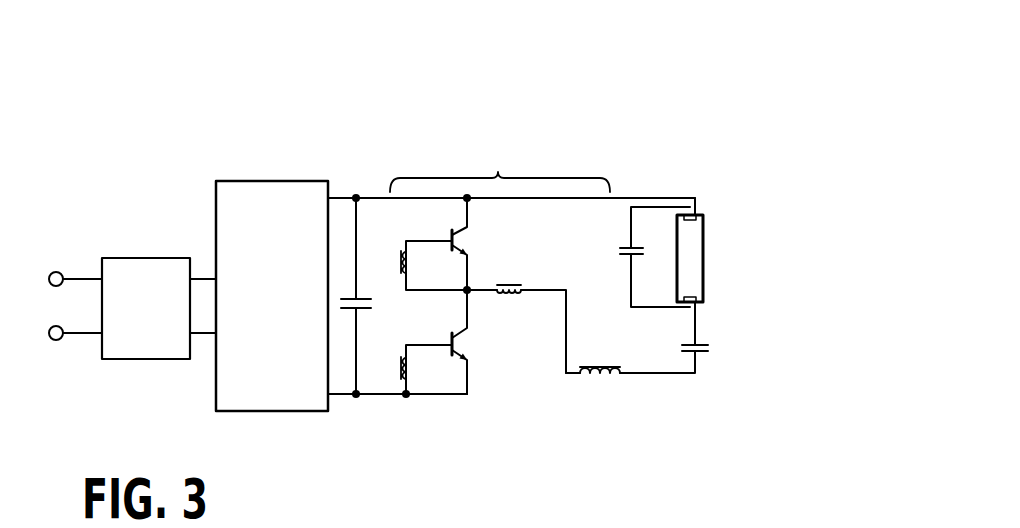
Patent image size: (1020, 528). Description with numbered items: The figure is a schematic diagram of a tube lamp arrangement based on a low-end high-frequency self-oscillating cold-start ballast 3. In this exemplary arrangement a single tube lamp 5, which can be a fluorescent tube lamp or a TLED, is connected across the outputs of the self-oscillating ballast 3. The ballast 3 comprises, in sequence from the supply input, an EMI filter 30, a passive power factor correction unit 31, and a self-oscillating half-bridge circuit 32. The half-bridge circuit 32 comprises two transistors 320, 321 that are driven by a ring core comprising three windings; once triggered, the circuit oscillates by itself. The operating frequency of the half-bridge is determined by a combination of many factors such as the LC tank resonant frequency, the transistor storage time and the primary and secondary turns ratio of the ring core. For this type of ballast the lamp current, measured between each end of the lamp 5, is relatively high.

The self-oscillating ballast 3 is at (414, 130).
The EMI filter 30 is at (155, 258).
The passive power factor correction unit 31 is at (269, 181).
The self-oscillating half-bridge circuit 32 is at (500, 257).
The transistor 320 is at (467, 236).
The transistor 321 is at (473, 345).
The tube lamp 5 is at (692, 252).